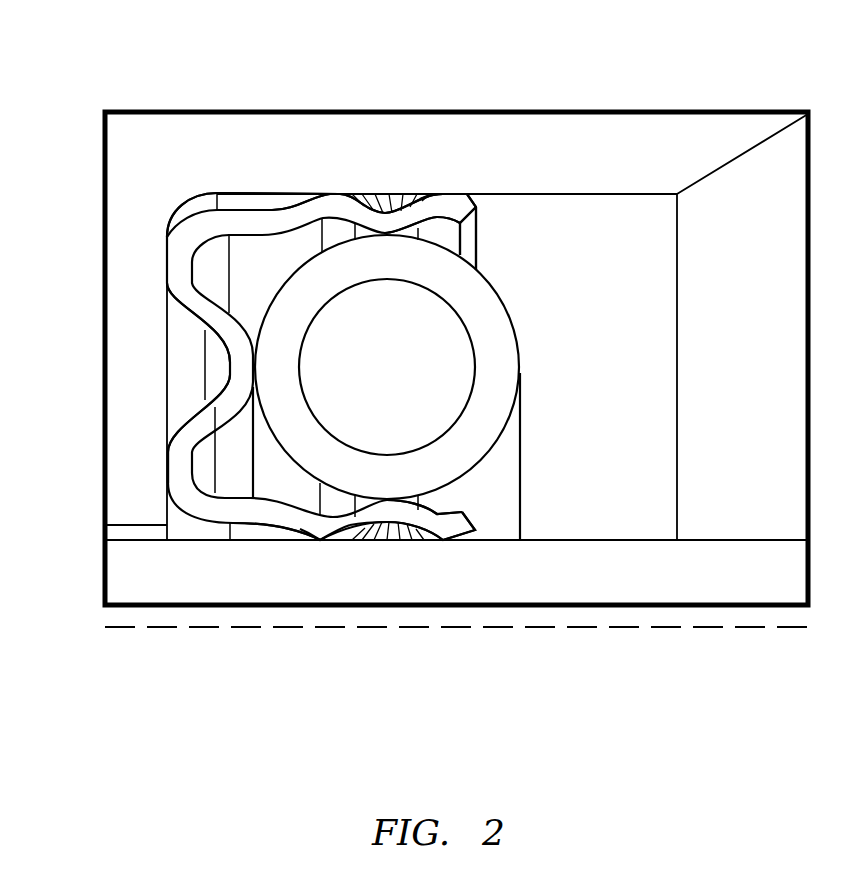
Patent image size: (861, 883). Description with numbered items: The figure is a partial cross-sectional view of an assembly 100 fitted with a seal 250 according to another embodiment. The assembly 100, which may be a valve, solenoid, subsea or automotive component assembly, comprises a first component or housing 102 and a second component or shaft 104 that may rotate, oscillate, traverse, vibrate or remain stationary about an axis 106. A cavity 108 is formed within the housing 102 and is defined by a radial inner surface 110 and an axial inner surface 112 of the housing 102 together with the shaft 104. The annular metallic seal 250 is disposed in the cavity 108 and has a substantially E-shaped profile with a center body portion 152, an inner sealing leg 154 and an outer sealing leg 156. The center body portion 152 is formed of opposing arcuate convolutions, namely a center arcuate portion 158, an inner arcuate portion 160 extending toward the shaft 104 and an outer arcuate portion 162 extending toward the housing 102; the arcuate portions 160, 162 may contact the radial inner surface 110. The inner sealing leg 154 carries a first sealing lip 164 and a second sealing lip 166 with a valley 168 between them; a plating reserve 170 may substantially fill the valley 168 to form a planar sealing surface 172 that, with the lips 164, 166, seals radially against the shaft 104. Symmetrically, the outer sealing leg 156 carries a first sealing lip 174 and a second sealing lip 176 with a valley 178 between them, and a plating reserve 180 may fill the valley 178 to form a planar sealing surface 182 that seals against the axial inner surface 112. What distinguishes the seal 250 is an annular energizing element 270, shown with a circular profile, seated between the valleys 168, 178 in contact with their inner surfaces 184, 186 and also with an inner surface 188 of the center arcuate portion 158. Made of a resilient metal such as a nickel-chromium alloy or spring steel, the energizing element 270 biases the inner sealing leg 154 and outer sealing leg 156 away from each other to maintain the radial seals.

The assembly 100 is at (456, 307).
The first component (housing) 102 is at (391, 129).
The second component (shaft) 104 is at (456, 634).
The axis 106 is at (456, 665).
The cavity 108 is at (711, 327).
The radial inner surface 110 is at (103, 388).
The axial inner surface 112 is at (447, 233).
The center body portion 152 is at (248, 366).
The inner sealing leg 154 is at (241, 623).
The outer sealing leg 156 is at (250, 110).
The center arcuate portion 158 is at (129, 322).
The inner arcuate portion 160 is at (129, 429).
The outer arcuate portion 162 is at (125, 207).
The first sealing lip 164 is at (473, 610).
The second sealing lip 166 is at (289, 607).
The valley 168 is at (418, 624).
The plating reserve 170 is at (333, 601).
The planar sealing surface 172 is at (362, 607).
The first sealing lip 174 is at (515, 159).
The second sealing lip 176 is at (274, 129).
The valley 178 is at (337, 131).
The plating reserve 180 is at (451, 127).
The planar sealing surface 182 is at (367, 111).
The inner surface of valley 184 is at (484, 488).
The inner surface of valley 186 is at (463, 245).
The inner surface of center arcuate portion 188 is at (364, 367).
The seal 250 is at (430, 434).
The energizing element 270 is at (427, 367).